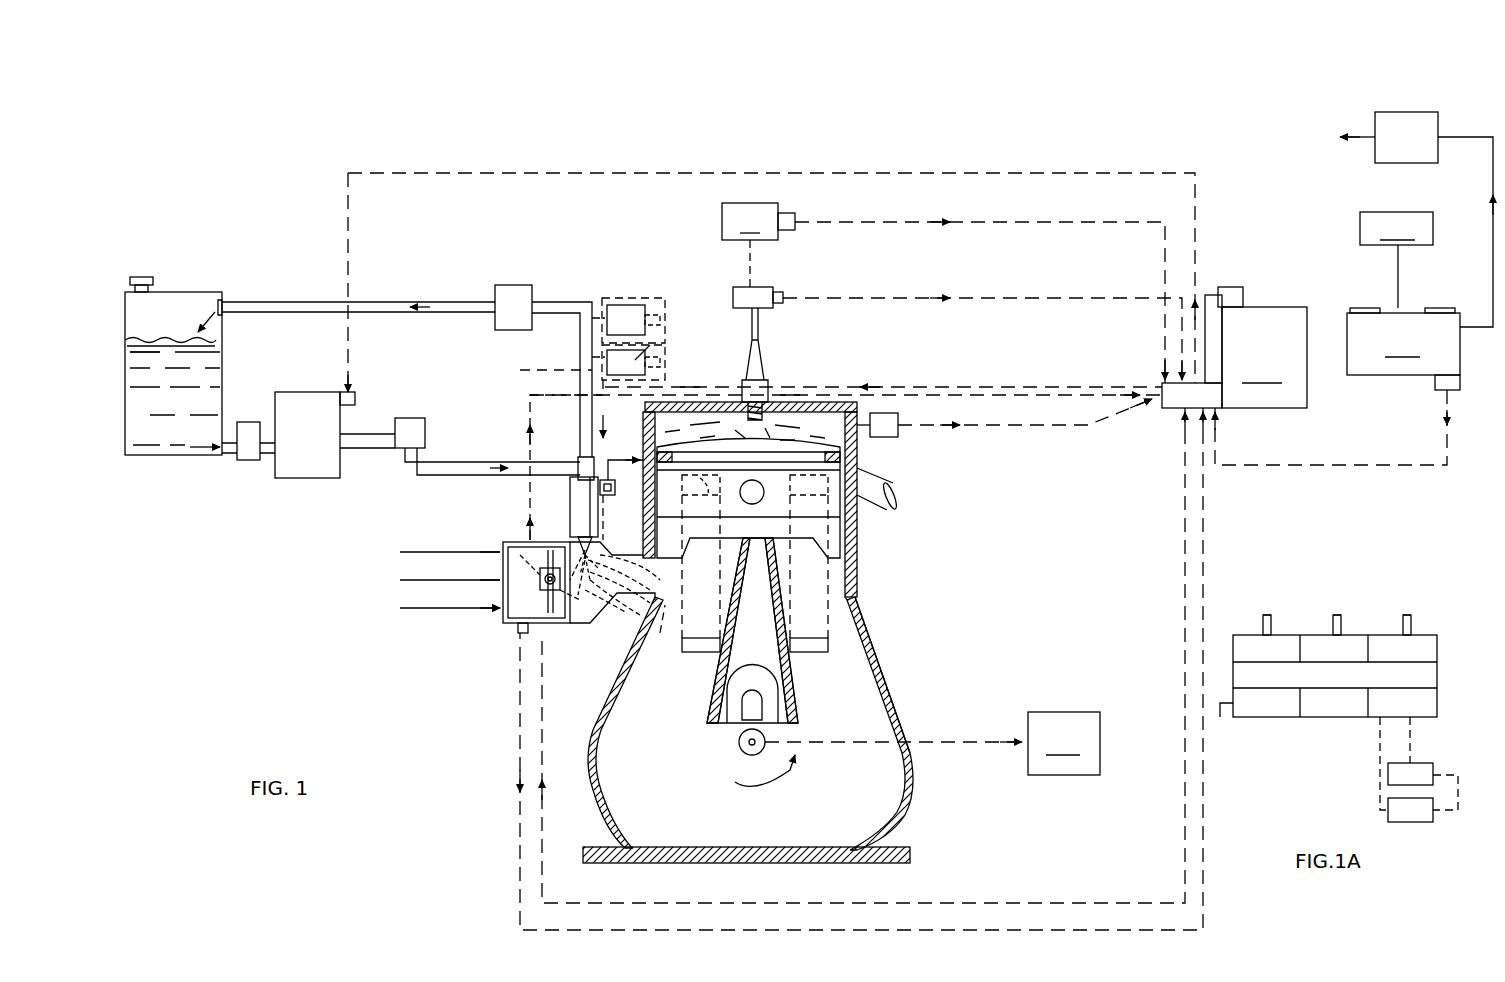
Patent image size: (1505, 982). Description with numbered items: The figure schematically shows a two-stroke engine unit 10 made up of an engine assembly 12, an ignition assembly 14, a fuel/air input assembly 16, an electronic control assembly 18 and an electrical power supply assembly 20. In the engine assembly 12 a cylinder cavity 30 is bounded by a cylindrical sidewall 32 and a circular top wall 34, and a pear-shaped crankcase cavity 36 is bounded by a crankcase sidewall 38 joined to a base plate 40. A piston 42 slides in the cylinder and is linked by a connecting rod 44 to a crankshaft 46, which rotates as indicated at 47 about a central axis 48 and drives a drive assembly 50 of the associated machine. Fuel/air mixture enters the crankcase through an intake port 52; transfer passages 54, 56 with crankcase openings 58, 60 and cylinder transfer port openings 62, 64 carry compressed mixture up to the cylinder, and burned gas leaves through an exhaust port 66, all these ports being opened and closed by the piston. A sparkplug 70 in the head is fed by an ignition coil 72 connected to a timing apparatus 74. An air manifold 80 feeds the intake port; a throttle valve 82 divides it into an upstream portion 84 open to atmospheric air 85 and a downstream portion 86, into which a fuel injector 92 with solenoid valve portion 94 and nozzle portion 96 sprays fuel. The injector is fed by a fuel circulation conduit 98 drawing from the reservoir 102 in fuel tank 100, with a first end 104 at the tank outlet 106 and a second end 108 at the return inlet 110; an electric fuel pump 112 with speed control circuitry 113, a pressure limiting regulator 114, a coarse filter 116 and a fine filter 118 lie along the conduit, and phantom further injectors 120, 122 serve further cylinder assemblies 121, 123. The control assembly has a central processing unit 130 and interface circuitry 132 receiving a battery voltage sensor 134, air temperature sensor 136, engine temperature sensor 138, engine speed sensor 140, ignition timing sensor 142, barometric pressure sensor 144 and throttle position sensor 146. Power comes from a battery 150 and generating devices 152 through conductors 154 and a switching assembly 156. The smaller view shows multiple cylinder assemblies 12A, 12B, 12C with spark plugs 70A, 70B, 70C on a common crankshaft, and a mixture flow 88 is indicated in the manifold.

In FIG. 1, the two-stroke engine unit 10 is at (1248, 158).
In FIG. 1A, the two-stroke engine unit 10 is at (1280, 543).
In FIG. 1, the engine assembly 12 is at (890, 650).
In FIG. 1A, the engine assembly 12 is at (1475, 630).
In FIG. 1A, the cylinder/crankcase/piston assembly 12A is at (1275, 635).
In FIG. 1A, the cylinder/crankcase/piston assembly 12B is at (1347, 635).
In FIG. 1A, the cylinder/crankcase/piston assembly 12C is at (1420, 635).
In FIG. 1, the ignition assembly 14 is at (790, 285).
In FIG. 1, the fuel/air input assembly 16 is at (590, 670).
In FIG. 1, the electronic control assembly 18 is at (1312, 410).
In FIG. 1A, the electronic control assembly 18 is at (1433, 764).
In FIG. 1, the electrical power supply assembly 20 is at (1450, 200).
In FIG. 1A, the electrical power supply assembly 20 is at (1410, 822).
In FIG. 1, the cylinder cavity 30 is at (678, 440).
In FIG. 1, the cylindrical sidewall 32 is at (857, 445).
In FIG. 1, the circular top wall 34 is at (820, 402).
In FIG. 1, the crankcase cavity 36 is at (880, 797).
In FIG. 1, the crankcase sidewall 38 is at (905, 675).
In FIG. 1, the base plate 40 is at (810, 863).
In FIG. 1, the cylindrical piston 42 is at (828, 520).
In FIG. 1, the connecting rod 44 is at (722, 645).
In FIG. 1, the crankshaft 46 is at (750, 712).
In FIG. 1A, the crankshaft 46 is at (1222, 715).
In FIG. 1, the crankshaft rotation 47 is at (756, 782).
In FIG. 1, the crankshaft central axis of rotation 48 is at (740, 748).
In FIG. 1, the drive assembly 50 is at (932, 743).
In FIG. 1, the intake port 52 is at (660, 565).
In FIG. 1, the transfer passage 54 is at (665, 635).
In FIG. 1, the transfer passage 56 is at (815, 615).
In FIG. 1, the crankshaft transfer passage opening 58 is at (700, 652).
In FIG. 1, the crankshaft transfer passage opening 60 is at (828, 652).
In FIG. 1, the cylinder transfer port opening 62 is at (722, 490).
In FIG. 1, the cylinder transfer port opening 64 is at (790, 490).
In FIG. 1, the exhaust port 66 is at (876, 481).
In FIG. 1, the sparkplug 70 is at (781, 374).
In FIG. 1A, the spark plug 70A is at (1260, 615).
In FIG. 1A, the spark plug 70B is at (1333, 615).
In FIG. 1A, the spark plug 70C is at (1402, 615).
In FIG. 1, the ignition coil 72 is at (738, 290).
In FIG. 1, the timing apparatus 74 is at (750, 245).
In FIG. 1, the air manifold 80 is at (510, 545).
In FIG. 1A, the air manifold 80 is at (1430, 675).
In FIG. 1, the throttle valve 82 is at (545, 605).
In FIG. 1, the upstream manifold portion 84 is at (520, 565).
In FIG. 1, the atmospheric air 85 is at (405, 580).
In FIG. 1, the downstream manifold portion 86 is at (588, 685).
In FIG. 1, the mixture flow 88 is at (608, 612).
In FIG. 1, the fuel injector 92 is at (602, 512).
In FIG. 1, the solenoid valve portion 94 is at (575, 490).
In FIG. 1, the gas jet nozzle portion 96 is at (585, 548).
In FIG. 1, the fuel circulation conduit 98 is at (565, 313).
In FIG. 1, the fuel tank 100 is at (220, 323).
In FIG. 1, the fuel reservoir 102 is at (205, 362).
In FIG. 1, the conduit first end 104 is at (218, 455).
In FIG. 1, the fuel tank outlet 106 is at (227, 458).
In FIG. 1, the conduit second end 108 is at (240, 305).
In FIG. 1, the fuel tank return inlet 110 is at (220, 305).
In FIG. 1, the electric fuel pump 112 is at (300, 460).
In FIG. 1, the speed control circuitry 113 is at (355, 395).
In FIG. 1, the pressure limiting regulator 114 is at (510, 285).
In FIG. 1, the coarse fuel filter 116 is at (247, 420).
In FIG. 1, the fine fuel filter 118 is at (410, 420).
In FIG. 1, the fuel injector 120 is at (660, 345).
In FIG. 1, the cylinder/crankcase/piston assembly 121 is at (535, 371).
In FIG. 1, the fuel injector 122 is at (620, 298).
In FIG. 1, the cylinder/crankcase/piston assembly 123 is at (665, 298).
In FIG. 1, the central processing unit 130 is at (1256, 351).
In FIG. 1, the interface circuitry 132 is at (1160, 408).
In FIG. 1, the battery voltage sensor 134 is at (1437, 383).
In FIG. 1, the air temperature sensor 136 is at (520, 640).
In FIG. 1, the engine temperature sensor 138 is at (892, 430).
In FIG. 1, the engine speed sensor 140 is at (788, 217).
In FIG. 1, the ignition timing sensor 142 is at (783, 290).
In FIG. 1, the barometric pressure sensor 144 is at (1230, 287).
In FIG. 1, the throttle position sensor 146 is at (540, 583).
In FIG. 1, the battery 150 is at (1403, 341).
In FIG. 1, the power generating devices 152 is at (1396, 260).
In FIG. 1, the conductors 154 is at (1360, 137).
In FIG. 1, the switching assembly 156 is at (1430, 112).